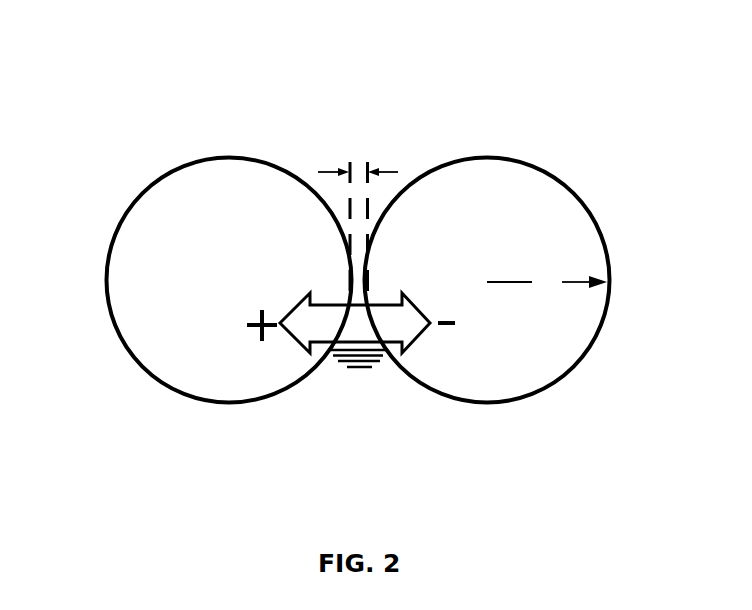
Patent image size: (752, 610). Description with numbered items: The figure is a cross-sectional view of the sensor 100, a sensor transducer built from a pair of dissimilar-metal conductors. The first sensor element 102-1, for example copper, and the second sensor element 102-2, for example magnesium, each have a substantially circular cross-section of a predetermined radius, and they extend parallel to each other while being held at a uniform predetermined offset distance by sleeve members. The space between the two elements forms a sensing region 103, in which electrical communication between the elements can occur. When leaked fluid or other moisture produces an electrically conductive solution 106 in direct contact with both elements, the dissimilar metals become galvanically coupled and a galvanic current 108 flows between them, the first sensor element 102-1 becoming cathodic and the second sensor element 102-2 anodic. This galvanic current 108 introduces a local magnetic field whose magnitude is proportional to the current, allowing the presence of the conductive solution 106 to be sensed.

The sensor 100 is at (124, 115).
The first sensor element 102-1 is at (307, 121).
The second sensor element 102-2 is at (572, 127).
The sensing region 103 is at (367, 285).
The electrically conductive solution 106 is at (369, 389).
The galvanic current 108 is at (376, 335).